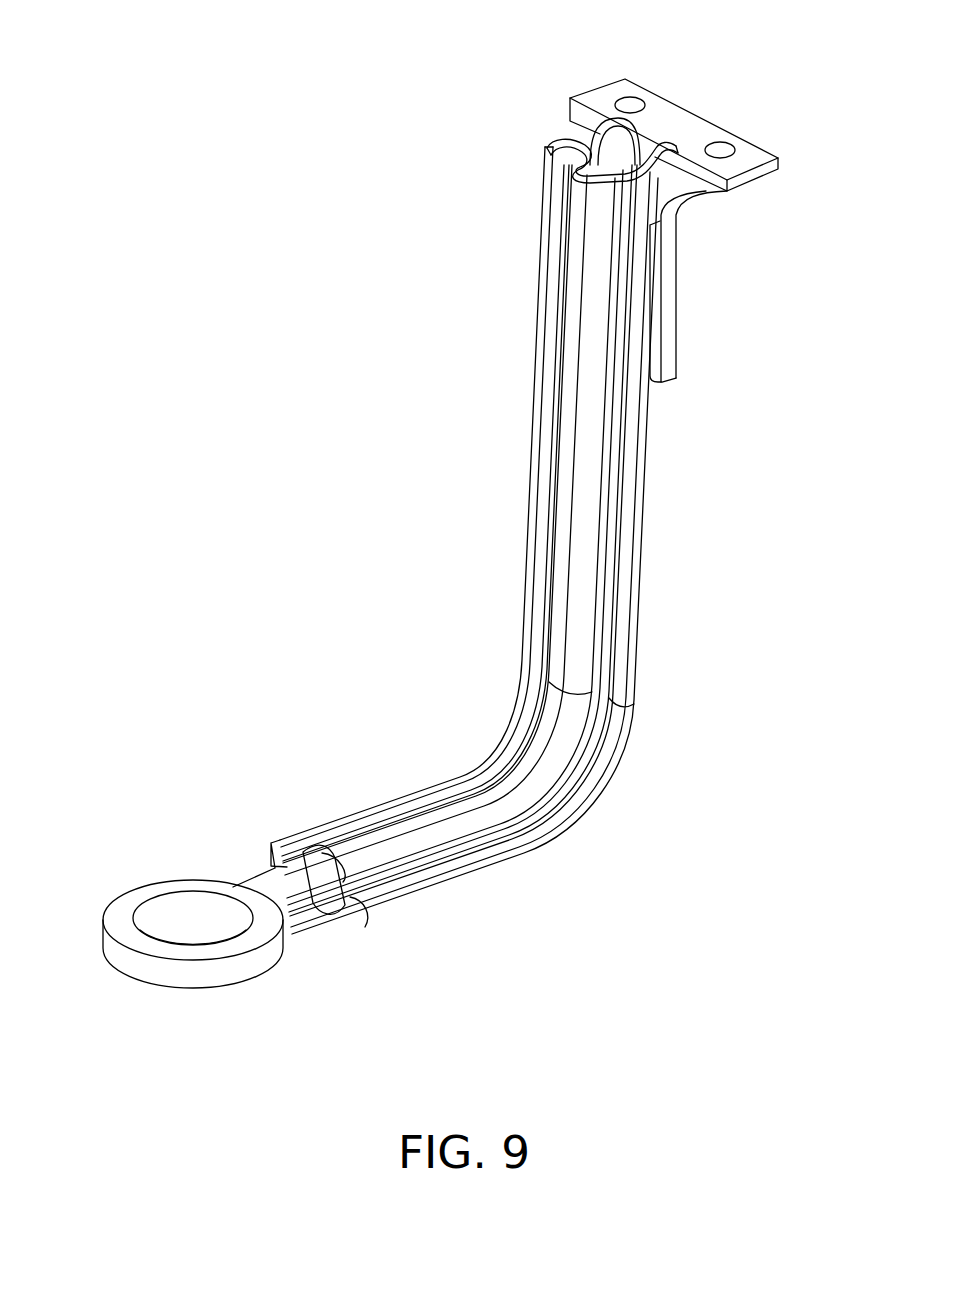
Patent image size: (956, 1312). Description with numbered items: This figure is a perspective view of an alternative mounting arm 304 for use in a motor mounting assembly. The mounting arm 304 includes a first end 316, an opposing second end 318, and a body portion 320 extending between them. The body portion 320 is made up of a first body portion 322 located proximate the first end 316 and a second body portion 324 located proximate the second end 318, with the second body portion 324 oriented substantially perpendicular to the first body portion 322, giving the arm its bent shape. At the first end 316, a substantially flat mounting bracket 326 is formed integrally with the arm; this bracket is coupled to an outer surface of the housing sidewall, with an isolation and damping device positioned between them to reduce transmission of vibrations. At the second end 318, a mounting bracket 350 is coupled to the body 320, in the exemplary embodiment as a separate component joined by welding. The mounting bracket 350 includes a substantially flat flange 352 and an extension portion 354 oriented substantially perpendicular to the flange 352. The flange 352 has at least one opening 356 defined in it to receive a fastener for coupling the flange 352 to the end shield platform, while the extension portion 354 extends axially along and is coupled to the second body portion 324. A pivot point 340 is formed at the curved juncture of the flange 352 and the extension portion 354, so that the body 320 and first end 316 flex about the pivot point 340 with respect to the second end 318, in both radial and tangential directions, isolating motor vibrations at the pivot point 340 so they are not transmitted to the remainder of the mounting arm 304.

The mounting arm 304 is at (283, 250).
The first end 316 is at (220, 860).
The second end 318 is at (503, 88).
The body portion 320 is at (530, 497).
The first body portion 322 is at (445, 885).
The second body portion 324 is at (555, 392).
The mounting bracket 326 is at (243, 972).
The pivot point 340 is at (597, 132).
The mounting bracket 350 is at (714, 214).
The flange 352 is at (683, 118).
The extension portion 354 is at (672, 325).
The opening 356 is at (727, 150).